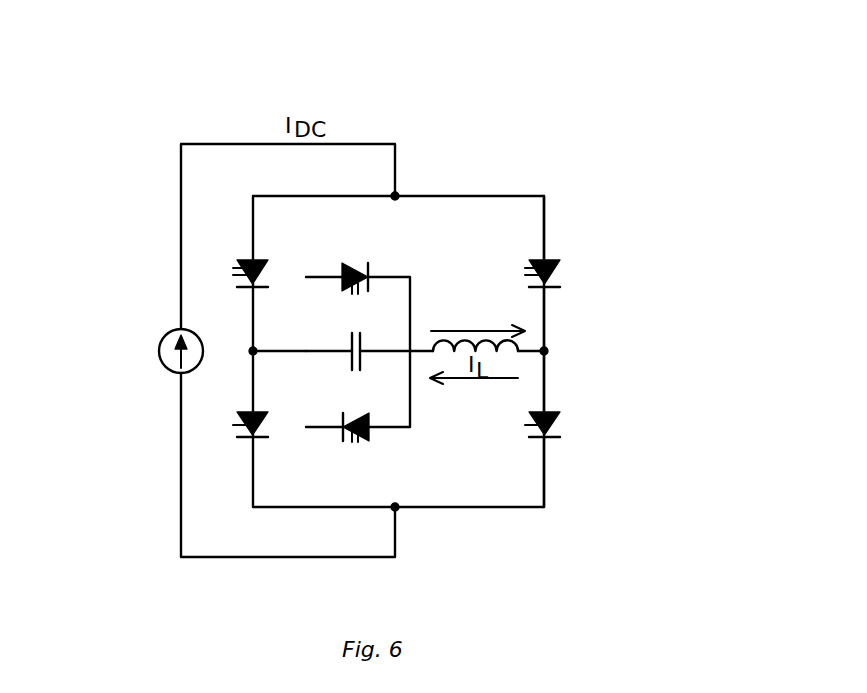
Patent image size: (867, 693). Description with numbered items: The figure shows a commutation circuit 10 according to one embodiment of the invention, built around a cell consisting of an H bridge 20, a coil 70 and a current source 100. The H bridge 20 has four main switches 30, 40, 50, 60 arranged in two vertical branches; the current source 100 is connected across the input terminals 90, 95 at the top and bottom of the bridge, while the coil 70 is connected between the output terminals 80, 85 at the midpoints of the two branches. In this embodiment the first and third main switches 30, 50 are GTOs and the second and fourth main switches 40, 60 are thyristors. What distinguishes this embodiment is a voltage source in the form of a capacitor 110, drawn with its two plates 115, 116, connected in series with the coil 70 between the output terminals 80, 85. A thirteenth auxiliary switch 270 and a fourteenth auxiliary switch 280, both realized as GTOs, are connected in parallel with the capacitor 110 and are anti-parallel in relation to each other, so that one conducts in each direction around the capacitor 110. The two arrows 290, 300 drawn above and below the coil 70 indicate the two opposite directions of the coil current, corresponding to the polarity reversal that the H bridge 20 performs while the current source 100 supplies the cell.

The commutation circuit 10 is at (552, 142).
The H bridge 20 is at (546, 230).
The first main switch 30 is at (268, 270).
The second main switch 40 is at (528, 414).
The third main switch 50 is at (528, 262).
The fourth main switch 60 is at (268, 424).
The coil 70 is at (452, 343).
The output terminal 80 is at (248, 351).
The output terminal 85 is at (548, 354).
The input terminal 90 is at (393, 194).
The input terminal 95 is at (393, 510).
The current source 100 is at (160, 350).
The capacitor 110 is at (372, 360).
The first capacitor plate 115 is at (352, 360).
The second capacitor plate 116 is at (380, 328).
The thirteenth auxiliary switch 270 is at (358, 259).
The fourteenth auxiliary switch 280 is at (362, 440).
The forward current direction 290 is at (494, 327).
The reverse current direction 300 is at (505, 382).